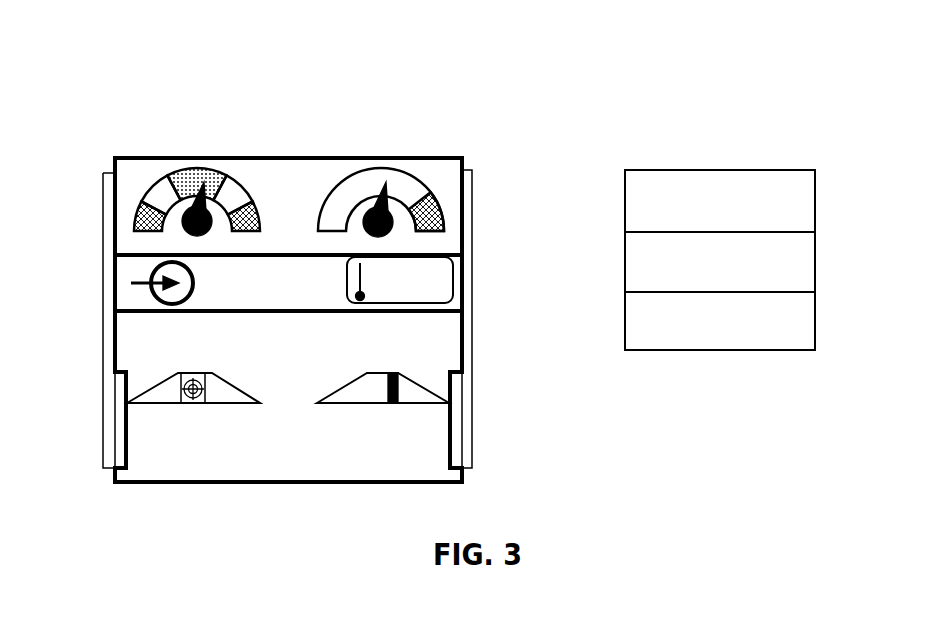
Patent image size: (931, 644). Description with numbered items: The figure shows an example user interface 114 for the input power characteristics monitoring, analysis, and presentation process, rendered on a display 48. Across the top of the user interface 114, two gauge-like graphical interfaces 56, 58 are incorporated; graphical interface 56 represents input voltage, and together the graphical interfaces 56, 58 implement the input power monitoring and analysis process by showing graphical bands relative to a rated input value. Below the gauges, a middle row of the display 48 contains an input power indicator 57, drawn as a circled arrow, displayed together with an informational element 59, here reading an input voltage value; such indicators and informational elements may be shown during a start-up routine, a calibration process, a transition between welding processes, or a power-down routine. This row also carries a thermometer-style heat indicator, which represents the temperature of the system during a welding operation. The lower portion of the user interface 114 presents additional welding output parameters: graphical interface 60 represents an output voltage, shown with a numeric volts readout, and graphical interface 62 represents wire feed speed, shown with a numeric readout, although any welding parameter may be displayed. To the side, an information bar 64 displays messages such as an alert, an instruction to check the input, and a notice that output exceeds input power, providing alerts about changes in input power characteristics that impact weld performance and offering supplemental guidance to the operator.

The user interface 114 is at (441, 116).
The display 48 is at (462, 272).
The graphical interface 56 is at (142, 183).
The input power indicator 57 is at (140, 271).
The graphical interface 58 is at (421, 176).
The informational element 59 is at (262, 304).
The graphical interface 60 is at (185, 354).
The graphical interface 62 is at (389, 355).
The information bar 64 is at (739, 163).